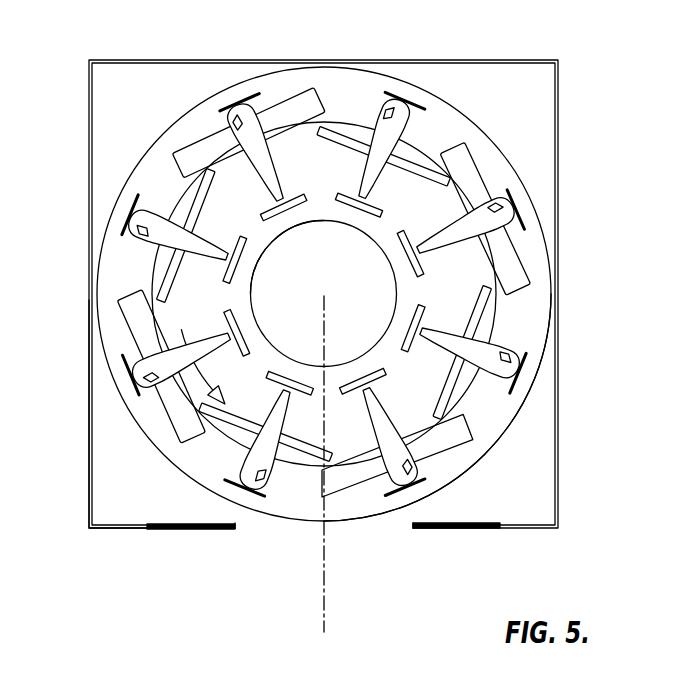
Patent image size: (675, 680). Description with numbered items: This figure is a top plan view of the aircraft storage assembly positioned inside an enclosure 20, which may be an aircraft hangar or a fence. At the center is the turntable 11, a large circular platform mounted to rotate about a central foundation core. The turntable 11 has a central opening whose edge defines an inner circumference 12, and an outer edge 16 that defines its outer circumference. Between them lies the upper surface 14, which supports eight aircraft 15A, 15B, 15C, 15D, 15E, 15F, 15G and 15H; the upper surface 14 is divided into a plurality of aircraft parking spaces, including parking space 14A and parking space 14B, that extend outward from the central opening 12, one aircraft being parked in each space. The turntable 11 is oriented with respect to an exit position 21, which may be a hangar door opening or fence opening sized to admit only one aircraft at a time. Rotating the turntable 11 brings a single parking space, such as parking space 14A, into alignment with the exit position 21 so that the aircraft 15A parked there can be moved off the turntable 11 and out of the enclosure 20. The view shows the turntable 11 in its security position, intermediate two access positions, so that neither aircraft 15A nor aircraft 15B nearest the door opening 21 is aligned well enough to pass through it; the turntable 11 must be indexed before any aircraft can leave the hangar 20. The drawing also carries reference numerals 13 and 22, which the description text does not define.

The turntable 11 is at (438, 122).
The central opening 12 is at (277, 273).
The hub wall 13 is at (250, 295).
The upper surface 14 is at (520, 323).
The aircraft parking space 14A is at (258, 490).
The aircraft parking space 14B is at (373, 497).
The aircraft 15A is at (205, 432).
The aircraft 15B is at (440, 435).
The aircraft 15C is at (492, 377).
The aircraft 15D is at (480, 203).
The aircraft 15E is at (375, 120).
The aircraft 15F is at (213, 140).
The aircraft 15G is at (175, 238).
The aircraft 15H is at (158, 362).
The outer edge 16 is at (548, 256).
The enclosure 20 is at (558, 208).
The exit position 21 is at (262, 530).
The side wall 22 is at (108, 475).